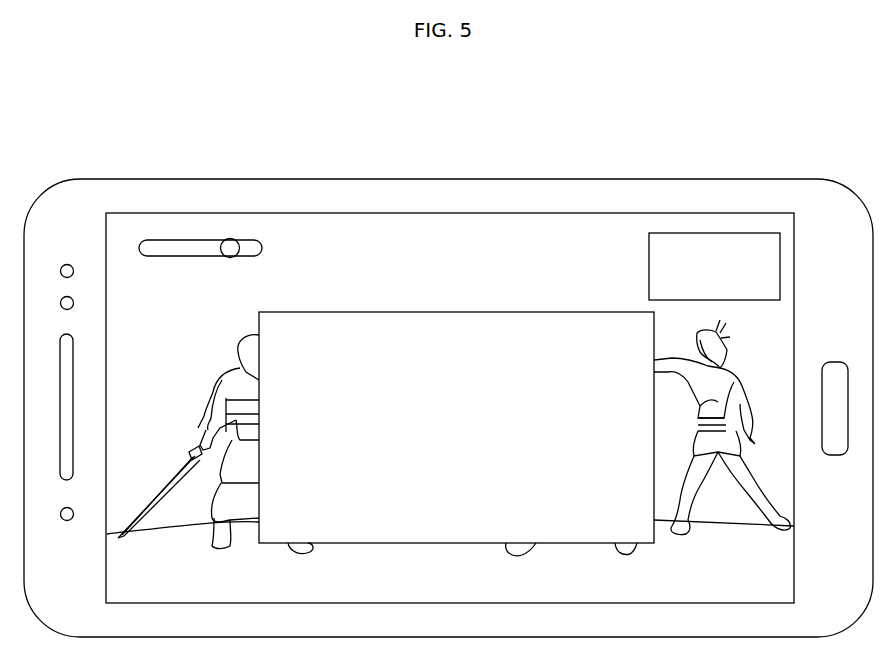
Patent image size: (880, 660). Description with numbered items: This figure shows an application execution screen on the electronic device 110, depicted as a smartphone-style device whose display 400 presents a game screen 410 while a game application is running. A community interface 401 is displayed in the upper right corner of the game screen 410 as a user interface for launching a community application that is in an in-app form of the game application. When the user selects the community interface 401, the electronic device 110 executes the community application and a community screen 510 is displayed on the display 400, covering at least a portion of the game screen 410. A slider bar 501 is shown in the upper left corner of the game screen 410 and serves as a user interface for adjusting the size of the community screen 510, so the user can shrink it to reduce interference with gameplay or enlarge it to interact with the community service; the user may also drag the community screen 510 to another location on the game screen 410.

The electronic device 110 is at (378, 179).
The display 400 is at (278, 213).
The community interface 401 is at (720, 233).
The game screen 410 is at (553, 230).
The slider bar 501 is at (182, 240).
The community screen 510 is at (472, 312).